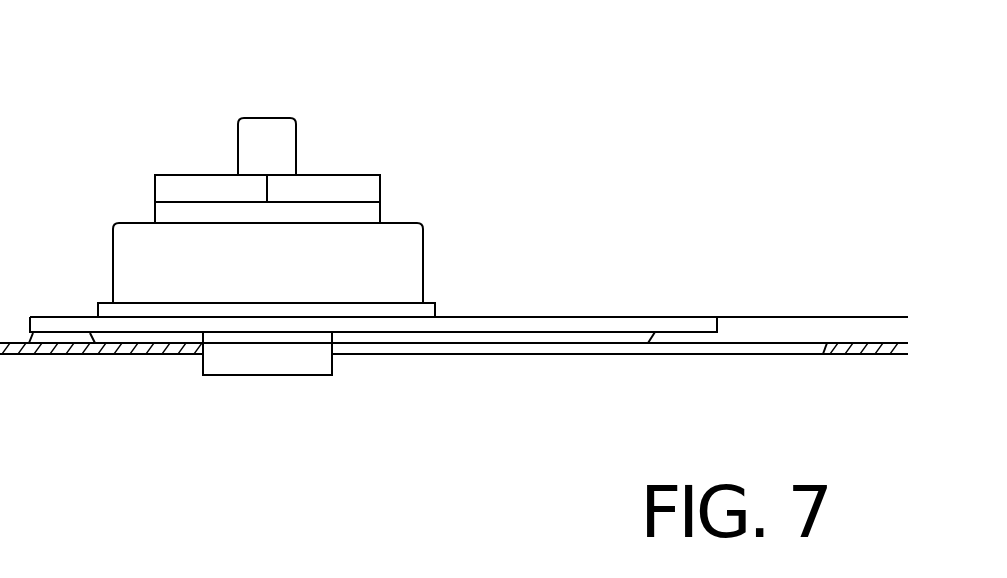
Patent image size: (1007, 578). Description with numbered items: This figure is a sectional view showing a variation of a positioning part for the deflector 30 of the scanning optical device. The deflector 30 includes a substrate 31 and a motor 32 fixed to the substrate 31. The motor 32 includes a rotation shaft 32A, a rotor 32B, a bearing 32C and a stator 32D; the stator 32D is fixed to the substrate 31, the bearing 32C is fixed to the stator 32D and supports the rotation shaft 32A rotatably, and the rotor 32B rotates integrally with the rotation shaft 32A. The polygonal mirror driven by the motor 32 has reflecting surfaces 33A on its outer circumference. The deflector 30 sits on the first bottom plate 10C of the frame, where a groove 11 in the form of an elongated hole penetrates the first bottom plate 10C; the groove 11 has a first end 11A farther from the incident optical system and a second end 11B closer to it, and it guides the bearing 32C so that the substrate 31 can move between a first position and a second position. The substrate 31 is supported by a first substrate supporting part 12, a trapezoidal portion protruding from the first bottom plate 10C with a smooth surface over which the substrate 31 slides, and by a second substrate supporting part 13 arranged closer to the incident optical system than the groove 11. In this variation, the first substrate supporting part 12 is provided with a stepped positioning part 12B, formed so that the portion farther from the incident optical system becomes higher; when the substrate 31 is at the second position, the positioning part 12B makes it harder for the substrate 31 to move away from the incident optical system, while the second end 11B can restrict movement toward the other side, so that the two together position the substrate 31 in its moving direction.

The deflector 30 is at (570, 88).
The motor 32 is at (426, 233).
The rotation shaft 32A is at (291, 141).
The rotor 32B is at (410, 258).
The bearing 32C is at (295, 363).
The stator 32D is at (405, 308).
The reflecting surfaces 33A is at (363, 190).
The substrate 31 is at (532, 328).
The first substrate supporting part 12 is at (802, 317).
The positioning part 12B is at (718, 322).
The groove 11 is at (633, 350).
The first end 11A is at (820, 351).
The second end 11B is at (206, 350).
The second substrate supporting part 13 is at (60, 337).
The first bottom plate 10C is at (863, 350).